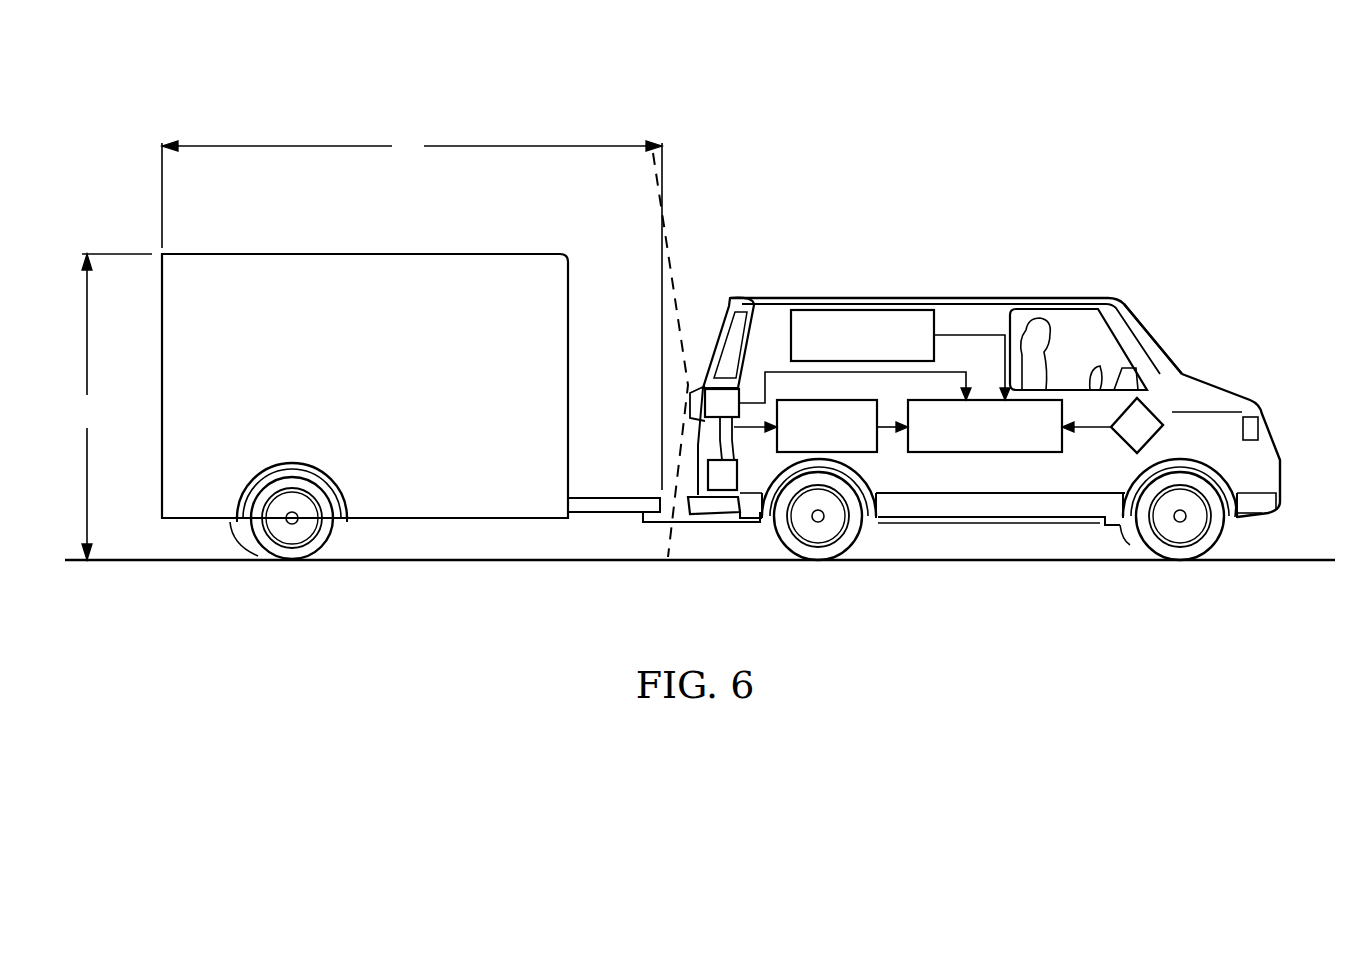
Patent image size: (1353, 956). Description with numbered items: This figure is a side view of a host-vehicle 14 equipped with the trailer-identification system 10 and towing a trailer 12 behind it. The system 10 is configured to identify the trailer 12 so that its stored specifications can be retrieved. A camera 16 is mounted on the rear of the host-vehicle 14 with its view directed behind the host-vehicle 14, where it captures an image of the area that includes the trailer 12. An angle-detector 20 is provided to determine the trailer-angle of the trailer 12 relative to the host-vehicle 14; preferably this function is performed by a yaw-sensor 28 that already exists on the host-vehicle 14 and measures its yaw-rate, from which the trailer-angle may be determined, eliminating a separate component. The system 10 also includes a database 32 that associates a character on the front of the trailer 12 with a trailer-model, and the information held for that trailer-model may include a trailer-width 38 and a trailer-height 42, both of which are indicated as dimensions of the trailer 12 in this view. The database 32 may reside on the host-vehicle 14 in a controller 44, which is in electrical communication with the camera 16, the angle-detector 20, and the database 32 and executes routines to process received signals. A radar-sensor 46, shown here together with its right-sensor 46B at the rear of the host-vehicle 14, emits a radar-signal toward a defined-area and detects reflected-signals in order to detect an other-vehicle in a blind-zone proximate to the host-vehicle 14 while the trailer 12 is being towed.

The trailer-identification system 10 is at (924, 138).
The trailer 12 is at (275, 254).
The host-vehicle 14 is at (990, 298).
The camera 16 is at (745, 312).
The angle-detector 20 is at (1156, 378).
The yaw-sensor 28 is at (1145, 395).
The database 32 is at (844, 310).
The trailer-width 38 is at (412, 312).
The trailer-height 42 is at (113, 407).
The controller 44 is at (1000, 452).
The radar-sensor 46 is at (868, 452).
The right-sensor 46B is at (730, 480).